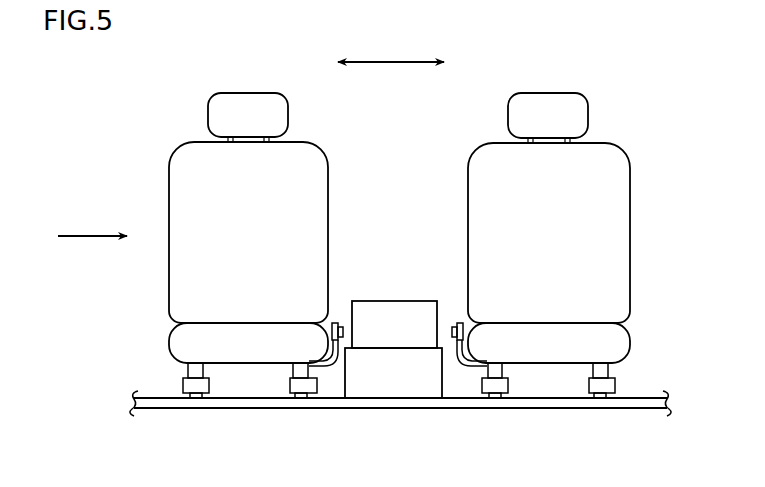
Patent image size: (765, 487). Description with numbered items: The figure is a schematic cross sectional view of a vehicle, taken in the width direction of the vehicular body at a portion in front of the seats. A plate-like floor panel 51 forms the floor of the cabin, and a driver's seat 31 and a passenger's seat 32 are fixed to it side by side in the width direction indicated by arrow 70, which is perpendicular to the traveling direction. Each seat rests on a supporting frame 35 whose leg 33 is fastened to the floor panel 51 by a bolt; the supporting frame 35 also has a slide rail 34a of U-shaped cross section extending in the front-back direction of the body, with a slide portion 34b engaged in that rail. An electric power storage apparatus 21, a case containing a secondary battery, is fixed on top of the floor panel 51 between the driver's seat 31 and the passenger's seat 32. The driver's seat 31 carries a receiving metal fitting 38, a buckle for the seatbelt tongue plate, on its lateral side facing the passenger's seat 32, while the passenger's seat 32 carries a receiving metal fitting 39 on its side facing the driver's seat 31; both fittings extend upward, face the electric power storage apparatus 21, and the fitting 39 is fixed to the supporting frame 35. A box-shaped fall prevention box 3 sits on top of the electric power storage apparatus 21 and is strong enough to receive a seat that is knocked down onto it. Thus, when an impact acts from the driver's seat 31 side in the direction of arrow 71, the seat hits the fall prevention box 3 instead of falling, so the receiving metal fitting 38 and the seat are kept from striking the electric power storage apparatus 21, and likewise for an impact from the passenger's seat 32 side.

The fall prevention box 3 is at (393, 311).
The electric power storage apparatus 21 is at (408, 365).
The driver's seat 31 is at (168, 205).
The passenger's seat 32 is at (632, 205).
The leg 33 is at (398, 425).
The slide rail 34a is at (185, 384).
The slide portion 34b is at (193, 372).
The supporting frame 35 is at (399, 423).
The receiving metal fitting 38 is at (335, 322).
The receiving metal fitting 39 is at (460, 322).
The floor panel 51 is at (373, 403).
The arrow 70 is at (393, 60).
The arrow 71 is at (86, 240).